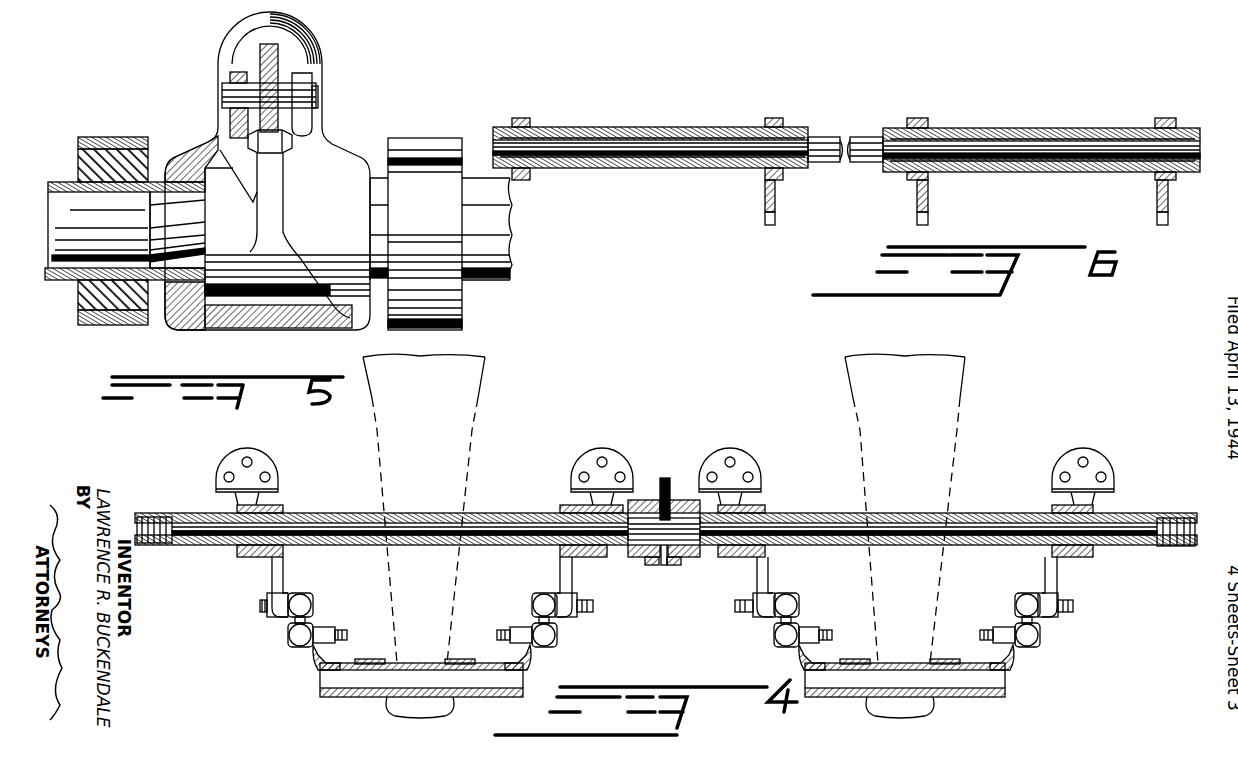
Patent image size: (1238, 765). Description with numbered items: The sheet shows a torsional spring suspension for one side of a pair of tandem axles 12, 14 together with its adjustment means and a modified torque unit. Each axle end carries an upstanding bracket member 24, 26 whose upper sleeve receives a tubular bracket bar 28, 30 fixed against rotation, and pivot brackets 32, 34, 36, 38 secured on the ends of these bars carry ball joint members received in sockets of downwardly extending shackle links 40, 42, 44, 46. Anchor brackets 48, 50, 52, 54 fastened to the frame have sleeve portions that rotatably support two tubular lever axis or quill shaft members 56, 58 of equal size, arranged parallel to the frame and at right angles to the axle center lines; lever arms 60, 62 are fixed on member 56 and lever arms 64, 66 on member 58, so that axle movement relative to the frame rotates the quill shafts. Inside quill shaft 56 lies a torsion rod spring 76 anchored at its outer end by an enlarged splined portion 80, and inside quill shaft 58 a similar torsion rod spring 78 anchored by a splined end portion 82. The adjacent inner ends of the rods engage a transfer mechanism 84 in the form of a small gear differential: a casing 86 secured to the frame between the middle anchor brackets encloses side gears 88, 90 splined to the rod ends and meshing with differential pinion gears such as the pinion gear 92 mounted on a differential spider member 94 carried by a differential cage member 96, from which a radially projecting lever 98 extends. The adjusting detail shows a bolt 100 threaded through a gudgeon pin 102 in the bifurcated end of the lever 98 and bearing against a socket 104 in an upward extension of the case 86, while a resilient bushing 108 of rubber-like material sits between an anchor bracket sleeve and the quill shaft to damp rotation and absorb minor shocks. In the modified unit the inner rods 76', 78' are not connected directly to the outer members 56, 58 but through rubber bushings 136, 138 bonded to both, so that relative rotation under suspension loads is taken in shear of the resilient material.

In FIG. 4, the tandem axle 12 is at (478, 410).
In FIG. 4, the tandem axle 14 is at (957, 410).
In FIG. 4, the bracket member 24 is at (390, 702).
In FIG. 4, the bracket member 26 is at (935, 703).
In FIG. 4, the bracket bar 28 is at (372, 658).
In FIG. 4, the bracket bar 30 is at (858, 663).
In FIG. 4, the pivot bracket 32 is at (318, 652).
In FIG. 4, the pivot bracket 34 is at (526, 653).
In FIG. 4, the pivot bracket 36 is at (803, 652).
In FIG. 4, the pivot bracket 38 is at (1009, 653).
In FIG. 4, the shackle link 40 is at (290, 620).
In FIG. 4, the shackle link 42 is at (554, 620).
In FIG. 4, the shackle link 44 is at (775, 620).
In FIG. 4, the shackle link 46 is at (1037, 620).
In FIG. 4, the anchor bracket 48 is at (216, 470).
In FIG. 5, the anchor bracket 50 is at (120, 137).
In FIG. 4, the anchor bracket 50 is at (575, 452).
In FIG. 5, the anchor bracket 52 is at (447, 138).
In FIG. 4, the anchor bracket 52 is at (755, 452).
In FIG. 4, the anchor bracket 54 is at (1057, 462).
In FIG. 5, the lever axis member 56 is at (62, 282).
In FIG. 6, the lever axis member 56 is at (631, 127).
In FIG. 4, the lever axis member 56 is at (340, 513).
In FIG. 5, the lever axis member 58 is at (515, 282).
In FIG. 6, the lever axis member 58 is at (995, 128).
In FIG. 4, the lever axis member 58 is at (1018, 513).
In FIG. 6, the lever arm 60 is at (522, 180).
In FIG. 4, the lever arm 60 is at (265, 575).
In FIG. 6, the lever arm 62 is at (765, 203).
In FIG. 4, the lever arm 62 is at (565, 575).
In FIG. 6, the lever arm 64 is at (928, 205).
In FIG. 4, the lever arm 64 is at (770, 573).
In FIG. 6, the lever arm 66 is at (1157, 200).
In FIG. 4, the lever arm 66 is at (1045, 573).
In FIG. 5, the torsion rod spring 76 is at (116, 230).
In FIG. 4, the torsion rod spring 76 is at (400, 509).
In FIG. 6, the inner rod 76' is at (650, 124).
In FIG. 4, the torsion rod spring 78 is at (928, 509).
In FIG. 6, the inner rod 78' is at (1004, 133).
In FIG. 4, the splined end portion 80 is at (170, 535).
In FIG. 4, the splined end portion 82 is at (1195, 548).
In FIG. 5, the transfer mechanism 84 is at (265, 328).
In FIG. 4, the transfer mechanism 84 is at (660, 560).
In FIG. 5, the casing 86 is at (330, 328).
In FIG. 4, the casing 86 is at (636, 553).
In FIG. 5, the side gear 88 is at (163, 285).
In FIG. 4, the side gear 88 is at (645, 498).
In FIG. 4, the side gear 90 is at (683, 498).
In FIG. 4, the differential pinion gear 92 is at (690, 553).
In FIG. 4, the differential spider member 94 is at (663, 565).
In FIG. 5, the differential cage member 96 is at (222, 300).
In FIG. 5, the lever 98 is at (283, 195).
In FIG. 5, the bolt 100 is at (280, 65).
In FIG. 5, the gudgeon pin 102 is at (318, 95).
In FIG. 5, the socket 104 is at (290, 48).
In FIG. 5, the resilient bushing 108 is at (80, 160).
In FIG. 6, the resilient bushing 136 is at (606, 168).
In FIG. 6, the resilient bushing 138 is at (1050, 172).